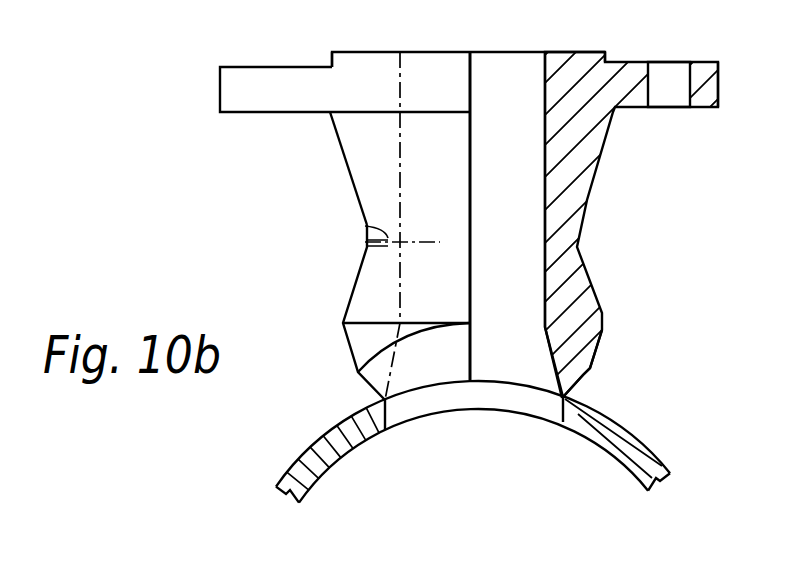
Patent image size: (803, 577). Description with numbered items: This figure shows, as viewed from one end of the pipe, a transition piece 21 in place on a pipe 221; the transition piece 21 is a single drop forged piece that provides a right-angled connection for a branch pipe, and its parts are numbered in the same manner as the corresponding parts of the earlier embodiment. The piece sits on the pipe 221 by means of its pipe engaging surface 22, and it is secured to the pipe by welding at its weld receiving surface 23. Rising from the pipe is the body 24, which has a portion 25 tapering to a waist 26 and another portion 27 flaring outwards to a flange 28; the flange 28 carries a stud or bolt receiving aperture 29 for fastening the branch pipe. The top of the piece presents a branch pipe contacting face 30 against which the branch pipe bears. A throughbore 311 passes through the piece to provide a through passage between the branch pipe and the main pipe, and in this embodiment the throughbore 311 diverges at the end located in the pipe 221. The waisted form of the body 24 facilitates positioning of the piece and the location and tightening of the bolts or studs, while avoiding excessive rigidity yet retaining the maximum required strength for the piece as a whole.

The transition piece 21 is at (278, 212).
The pipe engaging surface 22 is at (562, 398).
The pipe 221 is at (333, 455).
The weld receiving surface 23 is at (583, 384).
The body 24 is at (590, 197).
The tapering portion 25 is at (368, 295).
The waist 26 is at (365, 227).
The flaring portion 27 is at (363, 152).
The flange 28 is at (719, 92).
The stud or bolt receiving aperture 29 is at (673, 73).
The branch pipe contacting face 30 is at (438, 52).
The throughbore 311 is at (524, 86).